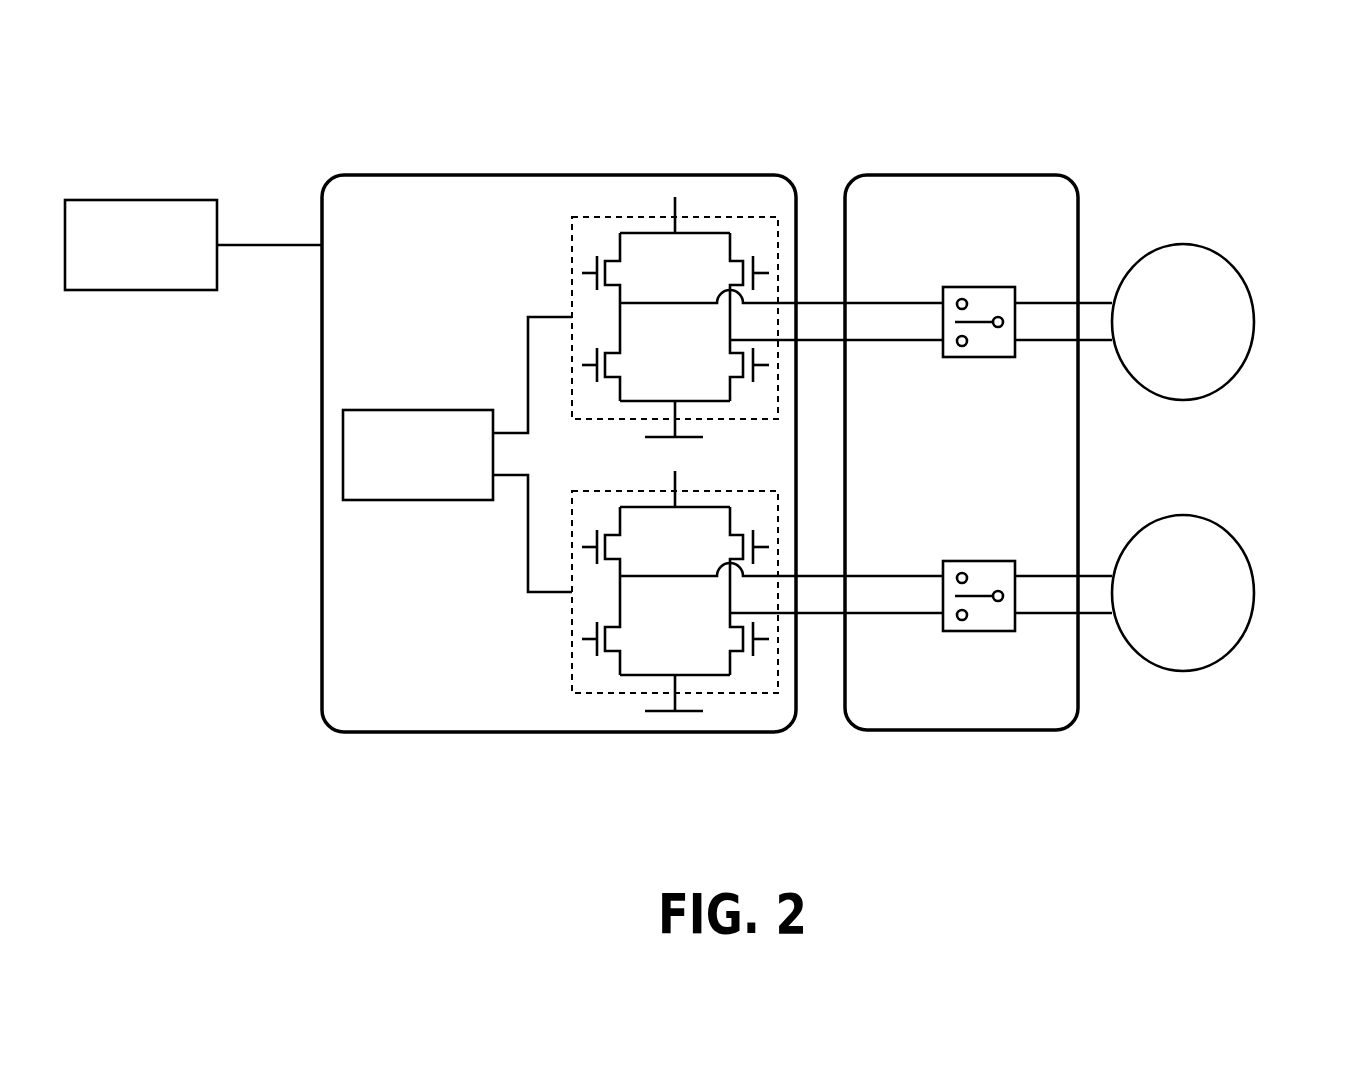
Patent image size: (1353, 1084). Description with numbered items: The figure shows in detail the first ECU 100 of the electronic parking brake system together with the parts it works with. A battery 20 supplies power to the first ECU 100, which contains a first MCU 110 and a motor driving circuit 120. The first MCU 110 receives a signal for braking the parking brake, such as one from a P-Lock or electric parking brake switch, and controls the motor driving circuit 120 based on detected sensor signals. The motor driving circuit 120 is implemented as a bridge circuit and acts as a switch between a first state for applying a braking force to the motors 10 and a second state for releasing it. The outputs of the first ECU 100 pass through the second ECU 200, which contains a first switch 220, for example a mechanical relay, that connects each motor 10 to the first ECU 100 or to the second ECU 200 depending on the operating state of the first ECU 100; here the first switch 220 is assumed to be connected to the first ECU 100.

The motor 10 is at (1254, 318).
The battery 20 is at (138, 200).
The first ECU 100 is at (558, 175).
The first MCU 110 is at (343, 452).
The motor driving circuit 120 is at (707, 217).
The second ECU 200 is at (963, 175).
The first switch 220 is at (978, 287).